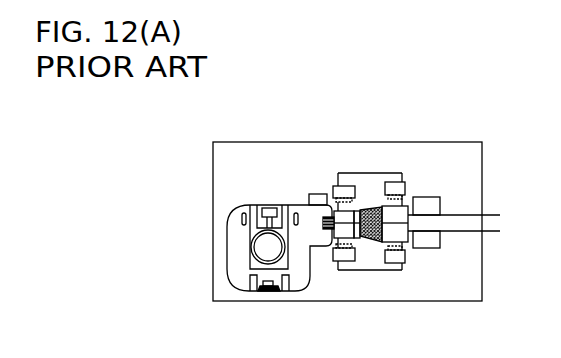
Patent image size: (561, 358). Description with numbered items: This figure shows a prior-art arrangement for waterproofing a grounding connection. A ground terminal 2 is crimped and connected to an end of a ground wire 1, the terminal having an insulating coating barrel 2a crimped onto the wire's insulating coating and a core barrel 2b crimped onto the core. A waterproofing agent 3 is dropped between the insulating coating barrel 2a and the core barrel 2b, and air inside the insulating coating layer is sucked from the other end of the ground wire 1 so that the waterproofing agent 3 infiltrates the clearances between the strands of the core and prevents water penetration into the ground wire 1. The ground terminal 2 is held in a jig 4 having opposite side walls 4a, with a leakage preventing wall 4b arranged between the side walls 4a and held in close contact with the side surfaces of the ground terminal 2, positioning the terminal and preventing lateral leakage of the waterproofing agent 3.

The ground wire 1 is at (453, 228).
The ground terminal 2 is at (228, 266).
The insulating coating barrel 2a is at (402, 208).
The core barrel 2b is at (337, 210).
The waterproofing agent 3 is at (366, 243).
The jig 4 is at (463, 302).
The side walls 4a is at (310, 195).
The leakage preventing wall 4b is at (363, 183).